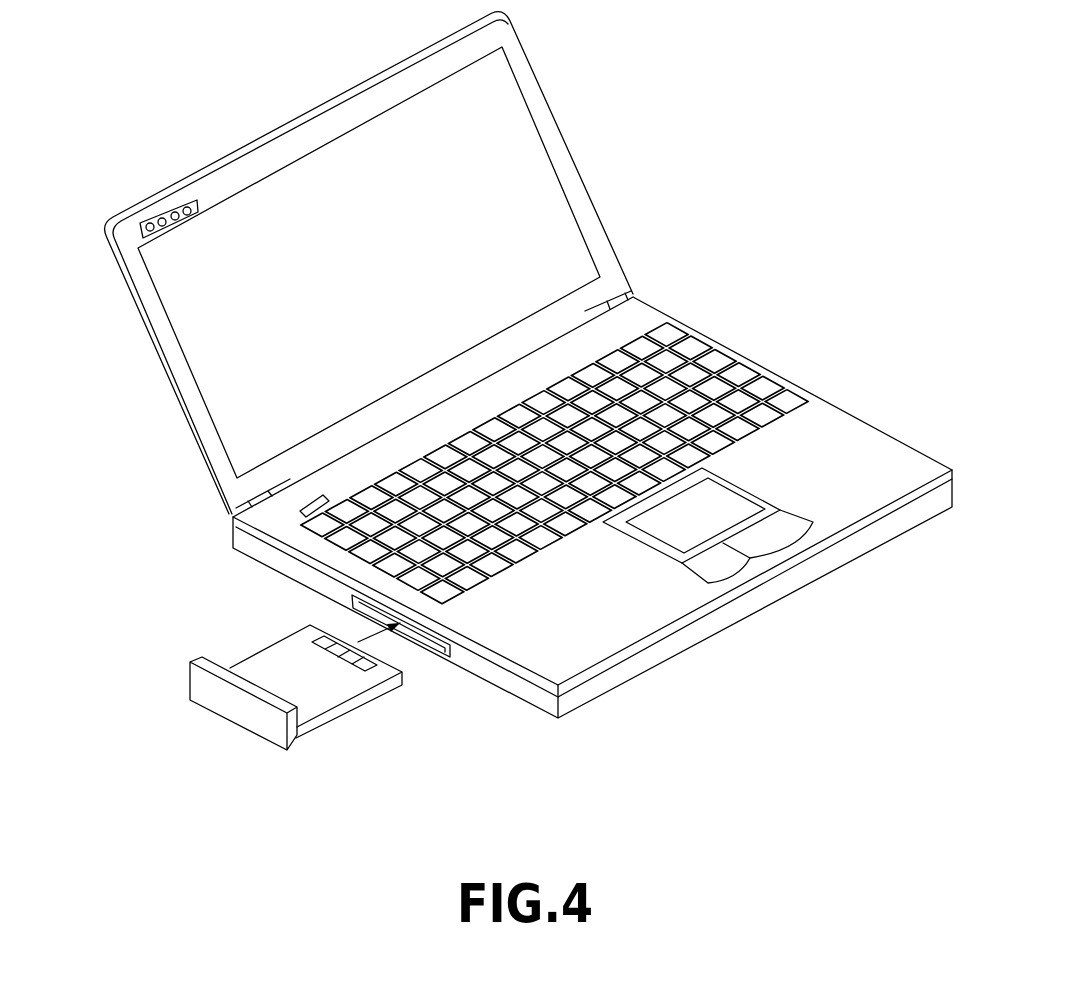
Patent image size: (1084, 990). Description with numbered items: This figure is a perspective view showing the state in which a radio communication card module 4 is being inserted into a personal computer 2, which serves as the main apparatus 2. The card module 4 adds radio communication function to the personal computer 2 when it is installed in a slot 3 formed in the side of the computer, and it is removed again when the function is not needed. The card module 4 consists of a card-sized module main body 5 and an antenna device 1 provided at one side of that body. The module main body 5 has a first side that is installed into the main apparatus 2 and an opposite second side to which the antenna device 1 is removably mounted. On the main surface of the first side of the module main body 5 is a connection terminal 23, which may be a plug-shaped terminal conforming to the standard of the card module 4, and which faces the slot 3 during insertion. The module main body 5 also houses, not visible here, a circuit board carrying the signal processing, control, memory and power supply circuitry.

The antenna device 1 is at (218, 702).
The personal computer 2 is at (528, 365).
The slot 3 is at (437, 648).
The radio communication card module 4 is at (288, 686).
The module main body 5 is at (313, 708).
The connection terminal 23 is at (368, 668).